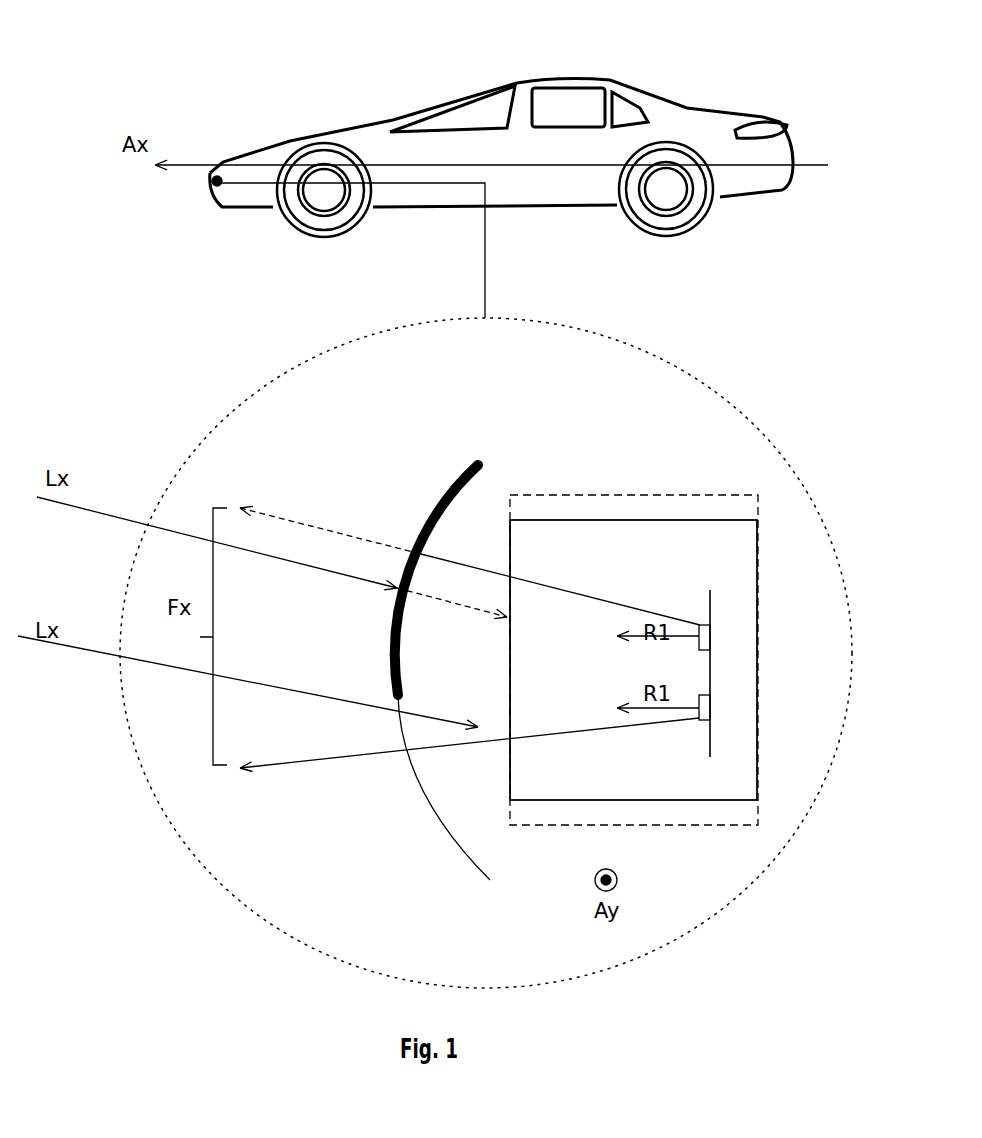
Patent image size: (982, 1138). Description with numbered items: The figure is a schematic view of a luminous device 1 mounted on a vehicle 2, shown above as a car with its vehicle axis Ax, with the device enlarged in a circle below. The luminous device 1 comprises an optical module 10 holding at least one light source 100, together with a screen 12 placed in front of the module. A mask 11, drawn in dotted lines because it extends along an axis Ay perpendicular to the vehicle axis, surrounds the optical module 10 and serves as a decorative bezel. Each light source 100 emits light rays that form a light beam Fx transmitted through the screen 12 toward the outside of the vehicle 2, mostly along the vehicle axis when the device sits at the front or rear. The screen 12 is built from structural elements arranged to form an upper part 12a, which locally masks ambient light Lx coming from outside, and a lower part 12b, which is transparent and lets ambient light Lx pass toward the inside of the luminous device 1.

The luminous device 1 is at (533, 318).
The vehicle 2 is at (402, 74).
The optical module 10 is at (537, 520).
The mask 11 is at (628, 495).
The screen 12 is at (367, 643).
The upper part 12a is at (440, 510).
The lower part 12b is at (398, 787).
The light source 100 is at (710, 637).